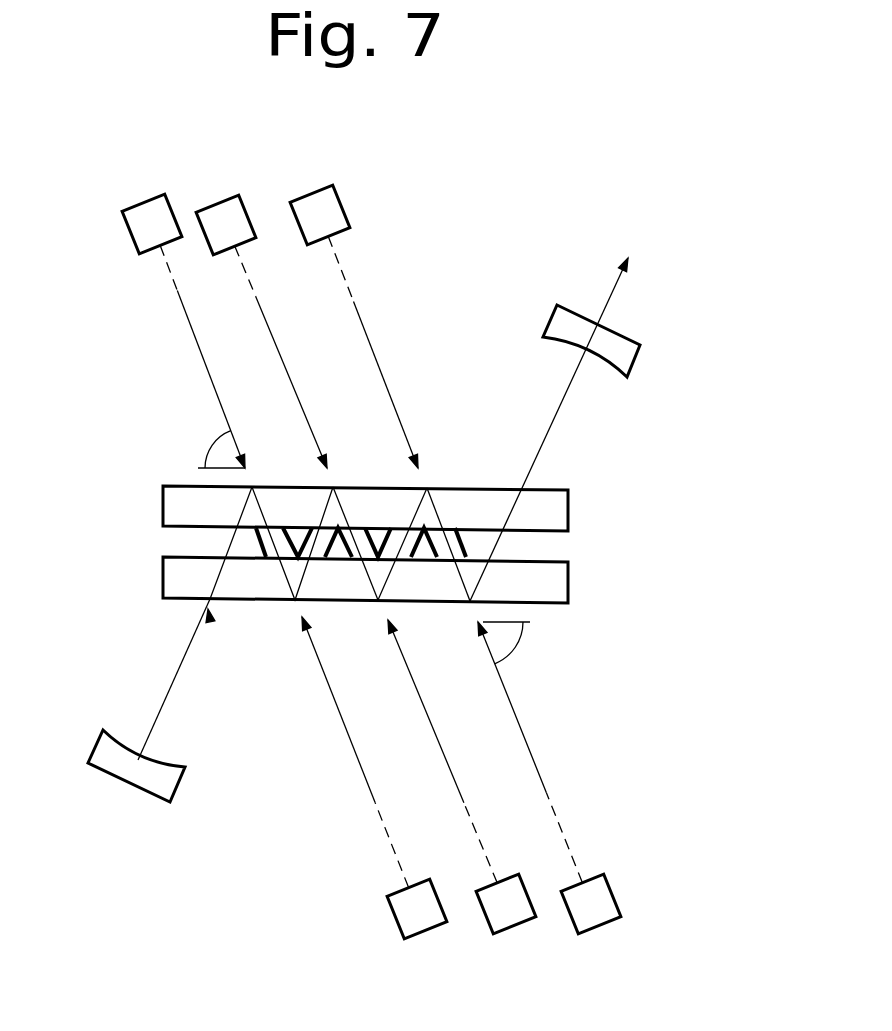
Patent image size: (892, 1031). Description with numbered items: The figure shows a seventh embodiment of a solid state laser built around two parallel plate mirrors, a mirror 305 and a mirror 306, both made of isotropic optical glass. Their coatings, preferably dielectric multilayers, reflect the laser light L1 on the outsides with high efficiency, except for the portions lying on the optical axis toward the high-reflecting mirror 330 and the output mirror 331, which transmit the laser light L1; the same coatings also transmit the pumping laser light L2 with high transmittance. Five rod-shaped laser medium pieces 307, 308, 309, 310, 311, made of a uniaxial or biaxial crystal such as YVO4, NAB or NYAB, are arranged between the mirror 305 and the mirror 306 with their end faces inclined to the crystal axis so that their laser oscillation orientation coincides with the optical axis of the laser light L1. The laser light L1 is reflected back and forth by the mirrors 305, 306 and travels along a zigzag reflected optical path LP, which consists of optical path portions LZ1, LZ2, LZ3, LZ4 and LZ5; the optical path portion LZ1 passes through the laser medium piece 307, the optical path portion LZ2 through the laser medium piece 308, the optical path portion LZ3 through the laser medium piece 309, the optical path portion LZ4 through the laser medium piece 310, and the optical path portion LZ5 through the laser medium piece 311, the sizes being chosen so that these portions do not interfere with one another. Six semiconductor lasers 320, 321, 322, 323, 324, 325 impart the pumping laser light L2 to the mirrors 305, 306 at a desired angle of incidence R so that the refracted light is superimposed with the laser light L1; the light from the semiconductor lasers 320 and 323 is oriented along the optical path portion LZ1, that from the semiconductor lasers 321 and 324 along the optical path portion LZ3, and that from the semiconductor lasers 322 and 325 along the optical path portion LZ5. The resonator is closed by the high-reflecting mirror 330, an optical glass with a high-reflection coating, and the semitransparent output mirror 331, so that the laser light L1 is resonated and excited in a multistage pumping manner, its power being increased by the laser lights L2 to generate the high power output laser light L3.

The mirror 305 is at (480, 492).
The mirror 306 is at (557, 605).
The laser medium piece 307 is at (263, 537).
The laser medium piece 308 is at (339, 565).
The laser medium piece 309 is at (367, 500).
The laser medium piece 310 is at (430, 565).
The laser medium piece 311 is at (520, 492).
The semiconductor laser 320 is at (145, 210).
The semiconductor laser 321 is at (218, 208).
The semiconductor laser 322 is at (323, 185).
The semiconductor laser 323 is at (425, 935).
The semiconductor laser 324 is at (517, 933).
The semiconductor laser 325 is at (617, 900).
The high-reflecting mirror 330 is at (140, 790).
The output mirror 331 is at (642, 333).
The laser light L1 is at (173, 677).
The pumping laser light L2 is at (272, 338).
The output laser light L3 is at (607, 290).
The reflected optical path LP is at (210, 620).
The optical path portion LZ1 is at (290, 578).
The optical path portion LZ2 is at (323, 503).
The optical path portion LZ3 is at (367, 603).
The optical path portion LZ4 is at (442, 492).
The optical path portion LZ5 is at (463, 603).
The angle of incidence R is at (365, 547).